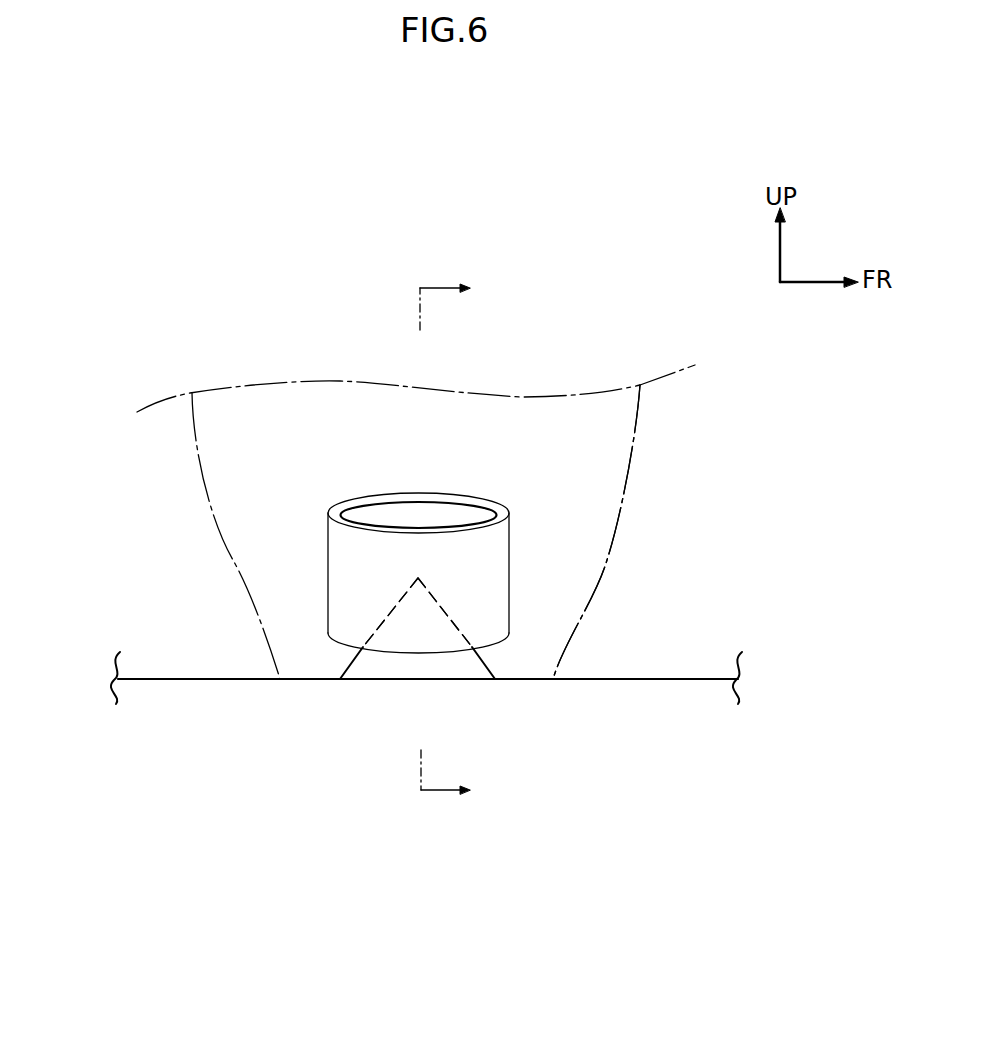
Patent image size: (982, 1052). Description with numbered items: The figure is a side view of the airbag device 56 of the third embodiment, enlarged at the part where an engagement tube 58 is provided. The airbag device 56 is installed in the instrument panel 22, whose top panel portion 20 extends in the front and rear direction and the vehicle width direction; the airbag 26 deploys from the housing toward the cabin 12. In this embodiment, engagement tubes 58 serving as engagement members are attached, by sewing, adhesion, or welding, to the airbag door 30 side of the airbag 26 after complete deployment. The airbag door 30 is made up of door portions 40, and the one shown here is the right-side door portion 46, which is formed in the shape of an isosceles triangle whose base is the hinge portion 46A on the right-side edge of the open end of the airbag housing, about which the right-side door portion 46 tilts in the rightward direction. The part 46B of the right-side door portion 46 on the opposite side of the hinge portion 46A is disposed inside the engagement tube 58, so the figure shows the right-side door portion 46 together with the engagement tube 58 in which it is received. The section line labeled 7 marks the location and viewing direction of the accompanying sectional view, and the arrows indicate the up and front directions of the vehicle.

The section line of FIG. 7 is at (432, 539).
The cabin 12 is at (136, 496).
The top panel portion 20 is at (500, 630).
The instrument panel 22 is at (653, 679).
The airbag 26 is at (643, 422).
The airbag door 30 is at (390, 679).
The door portion 40 is at (453, 663).
The right-side door portion 46 is at (470, 748).
The hinge portion 46A is at (372, 663).
The part of the right-side door portion on the opposite side of the hinge portion 46B is at (418, 578).
The airbag device 56 is at (108, 335).
The engagement tube 58 is at (509, 553).